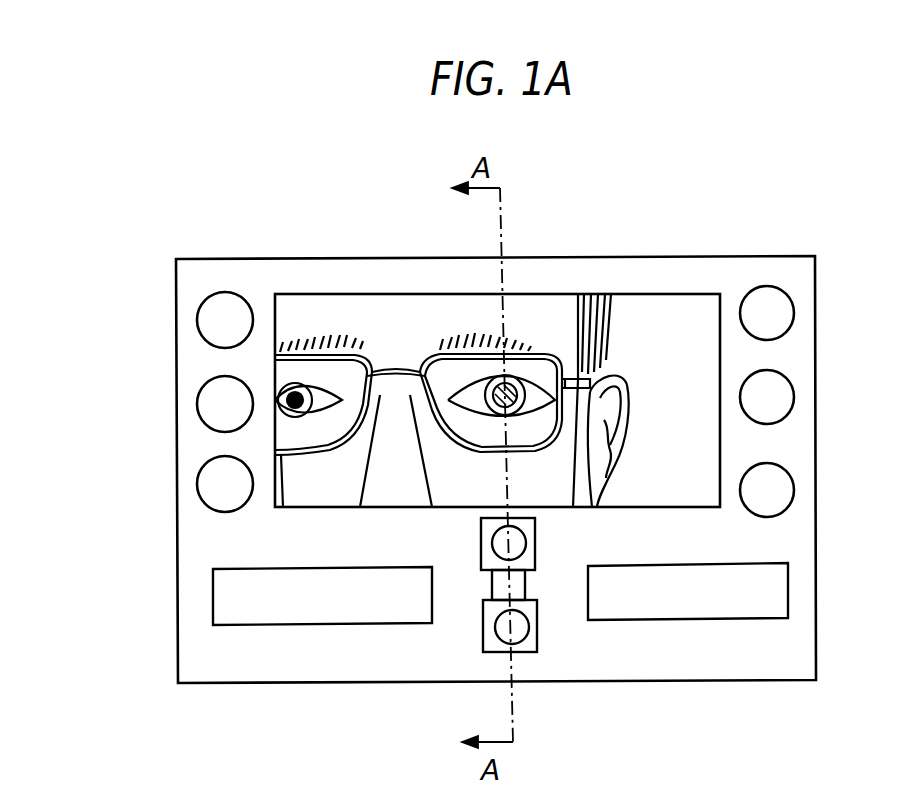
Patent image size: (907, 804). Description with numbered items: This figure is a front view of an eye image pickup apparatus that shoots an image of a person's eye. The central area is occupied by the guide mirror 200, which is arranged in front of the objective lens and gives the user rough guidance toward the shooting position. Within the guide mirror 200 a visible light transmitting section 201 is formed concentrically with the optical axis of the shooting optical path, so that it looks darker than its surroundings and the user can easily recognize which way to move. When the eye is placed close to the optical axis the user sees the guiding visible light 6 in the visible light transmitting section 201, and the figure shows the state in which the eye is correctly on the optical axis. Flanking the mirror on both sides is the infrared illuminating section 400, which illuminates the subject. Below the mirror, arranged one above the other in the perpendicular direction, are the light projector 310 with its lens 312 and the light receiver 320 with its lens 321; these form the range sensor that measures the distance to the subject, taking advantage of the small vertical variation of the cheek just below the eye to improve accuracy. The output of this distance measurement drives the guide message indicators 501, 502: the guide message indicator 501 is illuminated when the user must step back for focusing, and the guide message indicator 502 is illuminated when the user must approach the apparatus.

The guiding visible light 6 is at (497, 385).
The guide mirror 200 is at (645, 294).
The visible light transmitting section 201 is at (512, 385).
The light projector 310 is at (535, 539).
The lens 312 is at (483, 544).
The light receiver 320 is at (537, 644).
The lens 321 is at (488, 636).
The infrared illuminating section 400 is at (156, 287).
The guide message indicator 501 is at (332, 625).
The guide message indicator 502 is at (720, 618).